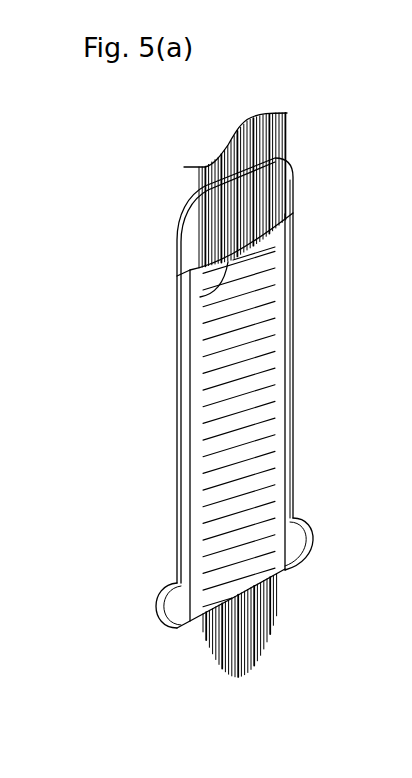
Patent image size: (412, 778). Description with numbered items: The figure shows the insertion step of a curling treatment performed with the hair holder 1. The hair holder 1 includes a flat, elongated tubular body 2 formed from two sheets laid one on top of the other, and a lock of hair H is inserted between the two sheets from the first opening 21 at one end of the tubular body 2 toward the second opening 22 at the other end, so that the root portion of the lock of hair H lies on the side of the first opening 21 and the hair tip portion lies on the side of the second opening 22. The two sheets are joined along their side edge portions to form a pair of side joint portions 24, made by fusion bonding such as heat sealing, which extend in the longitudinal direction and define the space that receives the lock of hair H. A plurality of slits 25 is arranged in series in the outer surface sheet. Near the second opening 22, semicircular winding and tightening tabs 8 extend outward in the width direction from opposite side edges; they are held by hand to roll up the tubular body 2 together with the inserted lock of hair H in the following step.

The lock of hair H is at (296, 130).
The hair holder 1 is at (296, 159).
The tubular body 2 is at (295, 250).
The first opening 21 is at (200, 297).
The second opening 22 is at (193, 627).
The side joint portions 24 is at (288, 376).
The slits 25 is at (268, 462).
The winding and tightening tabs 8 is at (297, 520).